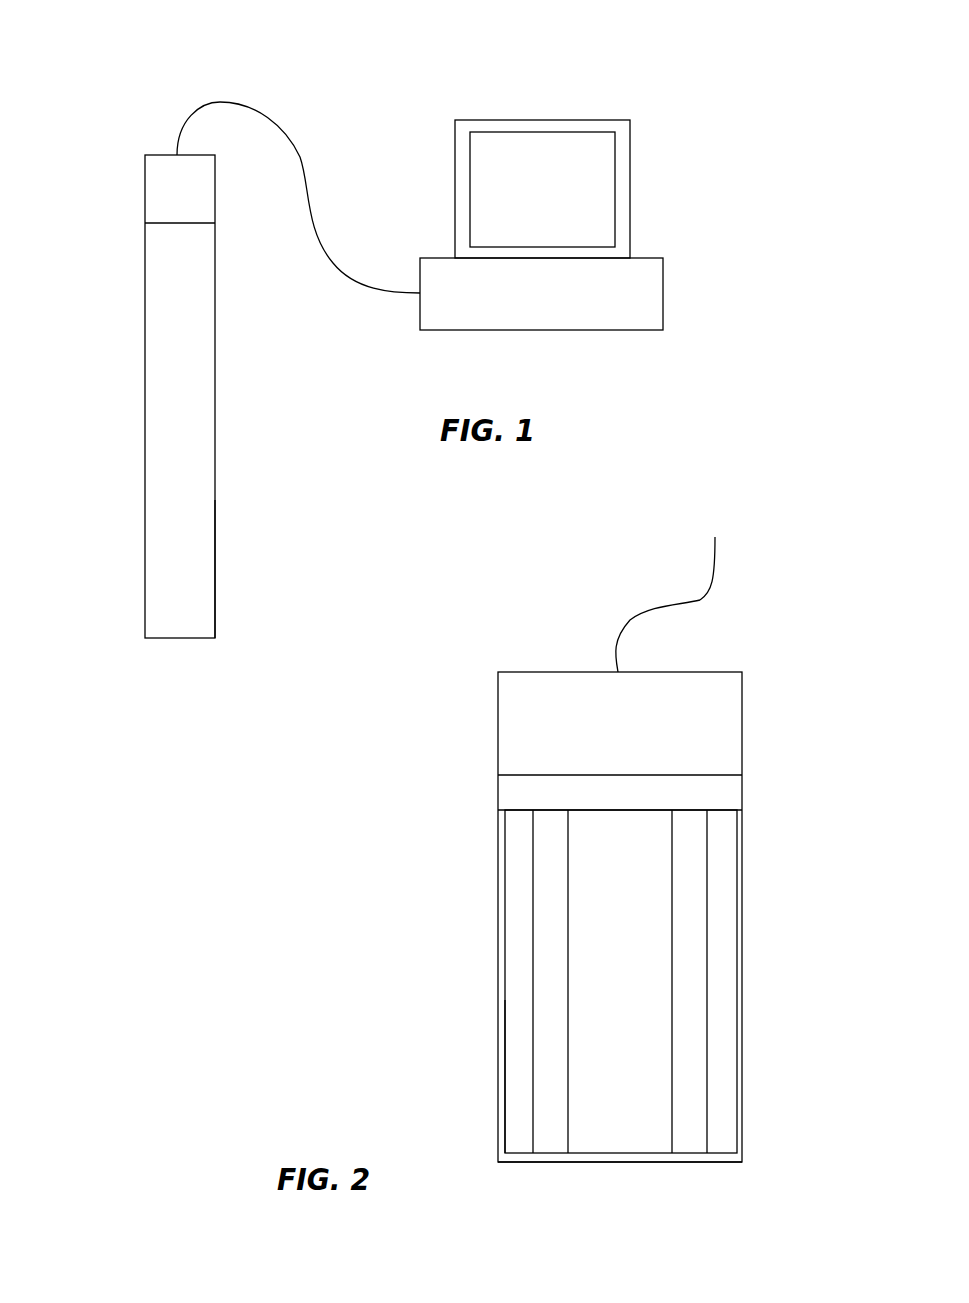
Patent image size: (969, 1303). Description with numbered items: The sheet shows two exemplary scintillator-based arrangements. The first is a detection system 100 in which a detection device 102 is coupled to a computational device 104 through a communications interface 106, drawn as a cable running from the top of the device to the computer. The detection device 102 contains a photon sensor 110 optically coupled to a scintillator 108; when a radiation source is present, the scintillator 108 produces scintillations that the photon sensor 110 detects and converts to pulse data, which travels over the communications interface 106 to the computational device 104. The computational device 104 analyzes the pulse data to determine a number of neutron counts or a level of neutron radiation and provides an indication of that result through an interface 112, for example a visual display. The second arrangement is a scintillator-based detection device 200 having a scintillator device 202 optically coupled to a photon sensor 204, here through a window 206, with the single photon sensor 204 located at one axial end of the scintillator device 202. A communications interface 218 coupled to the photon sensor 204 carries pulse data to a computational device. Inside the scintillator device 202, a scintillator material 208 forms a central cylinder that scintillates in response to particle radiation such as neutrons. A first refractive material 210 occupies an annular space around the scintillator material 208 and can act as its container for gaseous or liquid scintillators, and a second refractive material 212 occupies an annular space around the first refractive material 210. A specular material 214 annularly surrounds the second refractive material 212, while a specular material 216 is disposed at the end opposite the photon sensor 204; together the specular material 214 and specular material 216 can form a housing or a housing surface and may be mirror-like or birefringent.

In FIG. 1, the detection system 100 is at (545, 85).
In FIG. 1, the detection device 102 is at (145, 382).
In FIG. 1, the computational device 104 is at (663, 303).
In FIG. 1, the communications interface 106 is at (267, 117).
In FIG. 1, the scintillator 108 is at (215, 552).
In FIG. 1, the photon sensor 110 is at (145, 183).
In FIG. 1, the interface 112 is at (630, 190).
In FIG. 2, the scintillator-based detection device 200 is at (465, 681).
In FIG. 2, the scintillator device 202 is at (742, 945).
In FIG. 2, the photon sensor 204 is at (723, 727).
In FIG. 2, the window 206 is at (727, 793).
In FIG. 2, the scintillator material 208 is at (583, 888).
In FIG. 2, the first refractive material 210 is at (560, 957).
In FIG. 2, the second refractive material 212 is at (523, 1040).
In FIG. 2, the specular material 214 is at (500, 847).
In FIG. 2, the specular material 216 is at (608, 1162).
In FIG. 2, the communications interface 218 is at (702, 603).